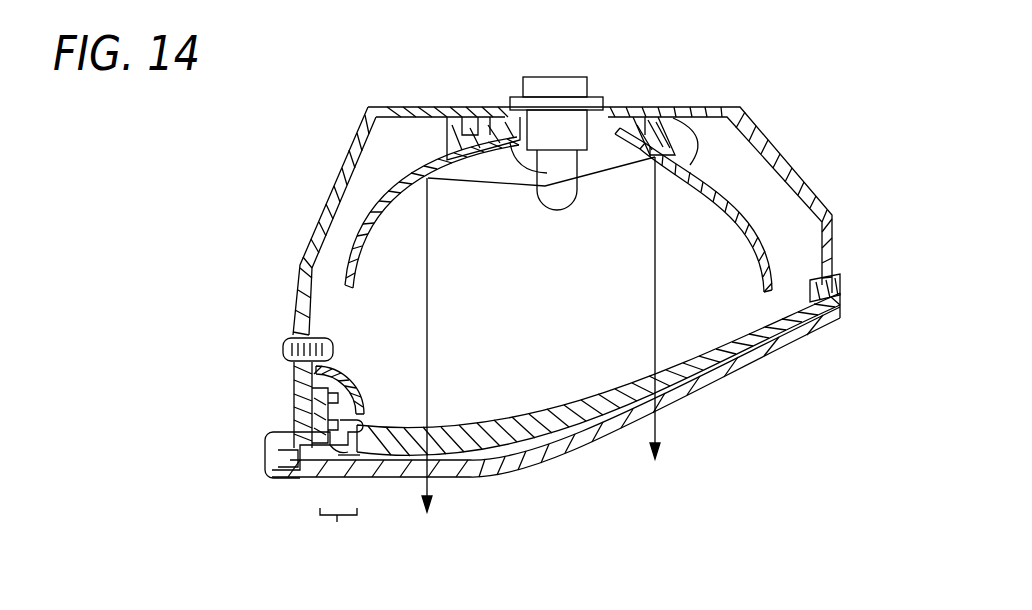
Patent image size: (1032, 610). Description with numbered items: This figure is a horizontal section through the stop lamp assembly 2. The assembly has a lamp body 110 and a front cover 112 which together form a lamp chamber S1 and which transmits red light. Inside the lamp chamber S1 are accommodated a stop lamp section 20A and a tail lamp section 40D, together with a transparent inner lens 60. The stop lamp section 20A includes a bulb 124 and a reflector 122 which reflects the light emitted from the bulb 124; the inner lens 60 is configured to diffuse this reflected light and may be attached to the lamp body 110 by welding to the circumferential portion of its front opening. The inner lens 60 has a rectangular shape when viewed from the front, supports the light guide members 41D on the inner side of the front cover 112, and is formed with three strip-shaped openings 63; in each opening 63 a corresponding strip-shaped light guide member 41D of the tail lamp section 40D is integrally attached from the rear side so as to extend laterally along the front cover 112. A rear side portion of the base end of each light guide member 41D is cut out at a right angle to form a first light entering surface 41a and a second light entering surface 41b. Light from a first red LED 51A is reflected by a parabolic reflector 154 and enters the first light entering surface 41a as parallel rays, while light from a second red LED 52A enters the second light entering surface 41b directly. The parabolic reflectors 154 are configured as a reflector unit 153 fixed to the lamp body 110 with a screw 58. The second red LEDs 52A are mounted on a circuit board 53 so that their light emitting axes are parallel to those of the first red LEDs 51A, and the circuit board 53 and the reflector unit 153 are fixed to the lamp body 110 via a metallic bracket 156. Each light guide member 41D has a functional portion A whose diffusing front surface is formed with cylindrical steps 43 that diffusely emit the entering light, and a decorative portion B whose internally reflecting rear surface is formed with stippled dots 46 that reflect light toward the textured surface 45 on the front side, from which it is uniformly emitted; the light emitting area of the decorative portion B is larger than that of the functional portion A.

The stop lamp assembly 2 is at (312, 178).
The bulb 124 is at (547, 178).
The reflector 122 is at (688, 150).
The lamp body 110 is at (738, 110).
The lamp chamber S1 is at (724, 242).
The stop lamp section 20A is at (586, 218).
The stippled dots 46 is at (566, 414).
The second light entering surface 41b is at (365, 416).
The tail lamp section 40D is at (556, 440).
The light guide member 41D is at (574, 455).
The opening 63 is at (761, 345).
The textured surface 45 is at (372, 524).
The decorative portion B is at (543, 530).
The functional portion A is at (338, 537).
The screw 58 is at (332, 335).
The circuit board 53 is at (300, 392).
The metallic bracket 156 is at (304, 418).
The reflector 154 is at (448, 366).
The reflector unit 153 is at (320, 388).
The first red LED 51A is at (355, 385).
The second red LED 52A is at (292, 442).
The first light entering surface 41a is at (335, 452).
The cylindrical steps 43 is at (346, 456).
The inner lens 60 is at (290, 480).
The front cover 112 is at (810, 338).